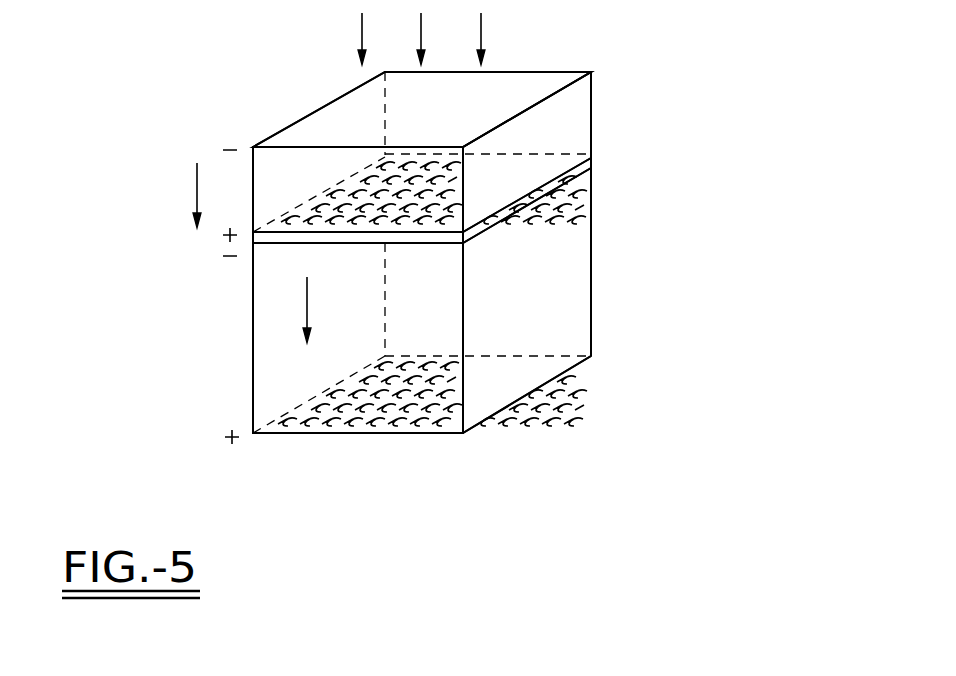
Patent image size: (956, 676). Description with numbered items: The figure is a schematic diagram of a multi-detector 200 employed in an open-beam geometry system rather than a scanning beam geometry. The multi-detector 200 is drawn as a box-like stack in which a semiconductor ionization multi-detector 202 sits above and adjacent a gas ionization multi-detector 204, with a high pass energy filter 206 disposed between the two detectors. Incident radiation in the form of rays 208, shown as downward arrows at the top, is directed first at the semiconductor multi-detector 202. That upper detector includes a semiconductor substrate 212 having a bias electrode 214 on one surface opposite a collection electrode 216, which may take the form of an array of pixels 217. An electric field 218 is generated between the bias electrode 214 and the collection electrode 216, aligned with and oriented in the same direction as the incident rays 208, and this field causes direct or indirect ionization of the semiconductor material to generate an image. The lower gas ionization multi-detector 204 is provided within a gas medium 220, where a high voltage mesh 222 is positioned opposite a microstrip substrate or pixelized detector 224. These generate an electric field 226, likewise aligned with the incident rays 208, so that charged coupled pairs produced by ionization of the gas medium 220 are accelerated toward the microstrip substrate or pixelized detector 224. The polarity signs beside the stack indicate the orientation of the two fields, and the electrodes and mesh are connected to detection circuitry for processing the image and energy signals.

The multi-detector 200 is at (210, 113).
The semiconductor ionization multi-detector 202 is at (348, 94).
The gas ionization multi-detector 204 is at (253, 355).
The high pass energy filter 206 is at (590, 161).
The rays 208 is at (481, 30).
The semiconductor substrate 212 is at (577, 135).
The bias electrode 214 is at (540, 76).
The collection electrode 216 is at (582, 170).
The array of pixels 217 is at (497, 192).
The electric field 218 is at (197, 193).
The gas medium 220 is at (547, 280).
The high voltage mesh 222 is at (537, 203).
The microstrip substrate or pixelized detector 224 is at (522, 397).
The electric field 226 is at (307, 300).